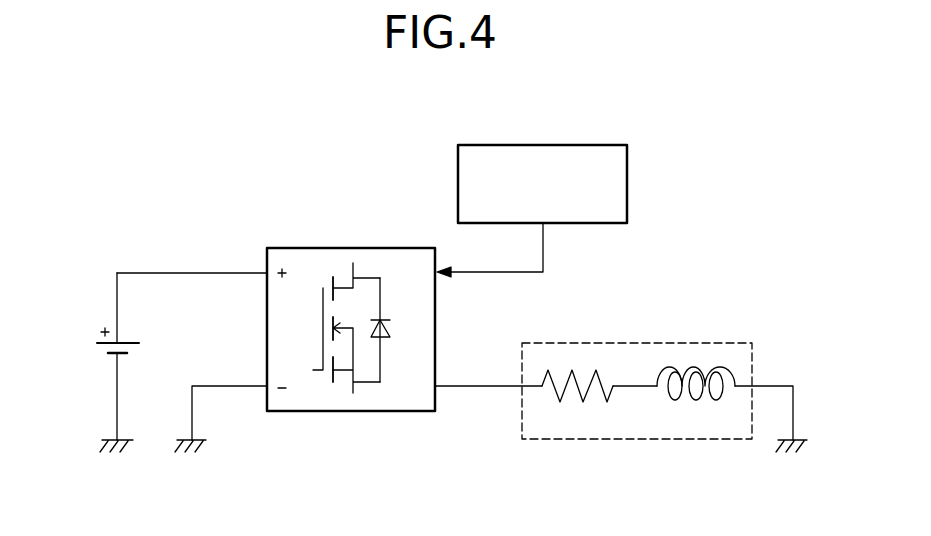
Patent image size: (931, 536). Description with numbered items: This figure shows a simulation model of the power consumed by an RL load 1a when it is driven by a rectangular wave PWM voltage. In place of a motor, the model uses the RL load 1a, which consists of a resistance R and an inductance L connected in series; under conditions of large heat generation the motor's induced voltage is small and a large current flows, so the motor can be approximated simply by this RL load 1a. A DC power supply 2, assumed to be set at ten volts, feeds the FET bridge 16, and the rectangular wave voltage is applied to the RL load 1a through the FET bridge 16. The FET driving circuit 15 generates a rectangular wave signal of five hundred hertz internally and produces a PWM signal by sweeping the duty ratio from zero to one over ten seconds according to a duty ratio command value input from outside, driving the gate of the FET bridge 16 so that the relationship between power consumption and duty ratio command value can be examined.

The DC power supply 2 is at (98, 344).
The FET driving circuit 15 is at (582, 145).
The FET bridge 16 is at (383, 248).
The RL load 1a is at (697, 343).